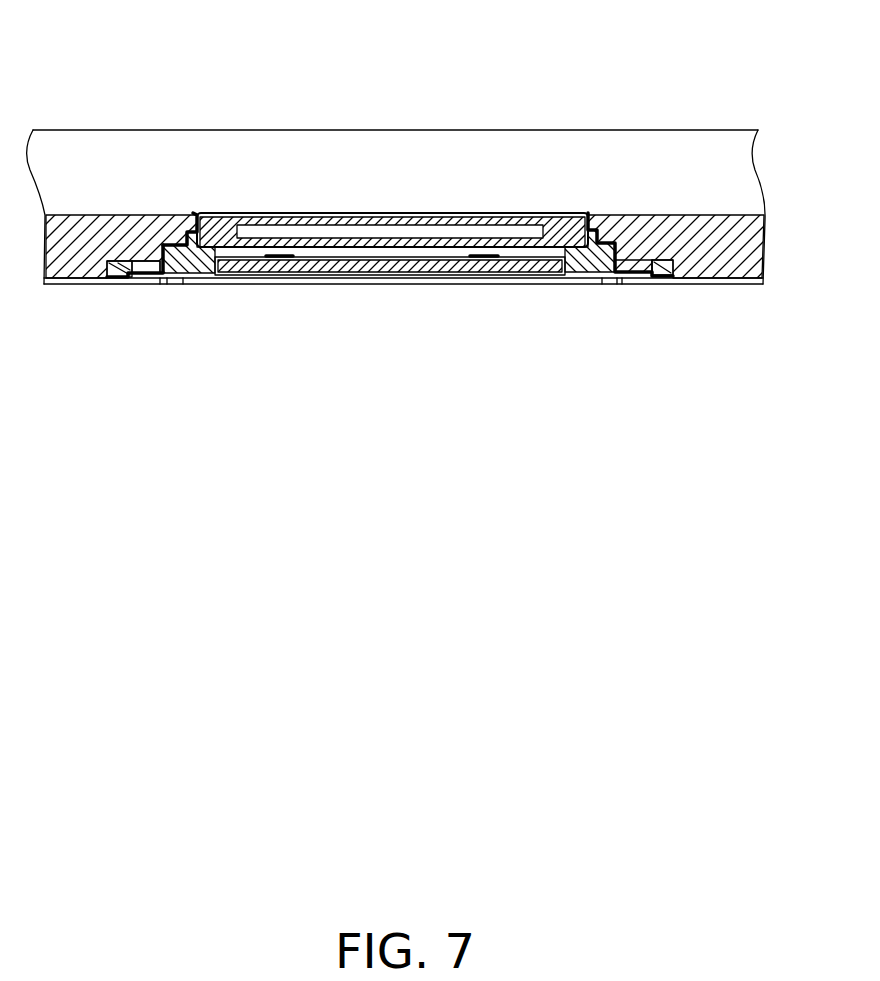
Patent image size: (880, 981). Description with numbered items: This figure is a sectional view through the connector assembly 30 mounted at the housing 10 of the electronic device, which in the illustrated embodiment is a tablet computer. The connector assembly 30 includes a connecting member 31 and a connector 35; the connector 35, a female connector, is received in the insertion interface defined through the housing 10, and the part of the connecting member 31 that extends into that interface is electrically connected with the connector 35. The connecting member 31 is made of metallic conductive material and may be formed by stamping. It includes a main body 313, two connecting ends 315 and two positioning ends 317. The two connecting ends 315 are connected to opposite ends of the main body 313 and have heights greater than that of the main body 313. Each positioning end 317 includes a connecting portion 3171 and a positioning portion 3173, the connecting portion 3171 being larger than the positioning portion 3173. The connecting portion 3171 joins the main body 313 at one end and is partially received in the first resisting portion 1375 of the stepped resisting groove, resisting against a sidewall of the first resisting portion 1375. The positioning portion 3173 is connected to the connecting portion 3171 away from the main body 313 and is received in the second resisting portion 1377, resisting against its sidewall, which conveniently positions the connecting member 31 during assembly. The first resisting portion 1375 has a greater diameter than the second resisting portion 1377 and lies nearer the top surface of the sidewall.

The housing 10 is at (693, 243).
The connector assembly 30 is at (643, 63).
The connecting member 31 is at (615, 237).
The connector 35 is at (567, 225).
The main body 313 is at (268, 272).
The connecting end 315 is at (119, 264).
The positioning end 317 is at (371, 141).
The connecting portion 3171 is at (170, 247).
The positioning portion 3173 is at (192, 234).
The first resisting portion 1375 is at (623, 256).
The second resisting portion 1377 is at (569, 238).